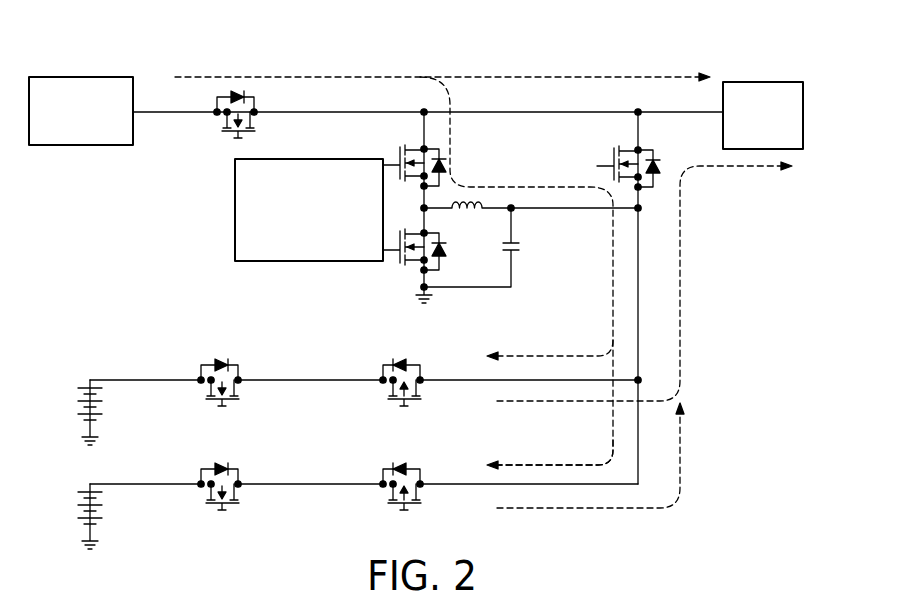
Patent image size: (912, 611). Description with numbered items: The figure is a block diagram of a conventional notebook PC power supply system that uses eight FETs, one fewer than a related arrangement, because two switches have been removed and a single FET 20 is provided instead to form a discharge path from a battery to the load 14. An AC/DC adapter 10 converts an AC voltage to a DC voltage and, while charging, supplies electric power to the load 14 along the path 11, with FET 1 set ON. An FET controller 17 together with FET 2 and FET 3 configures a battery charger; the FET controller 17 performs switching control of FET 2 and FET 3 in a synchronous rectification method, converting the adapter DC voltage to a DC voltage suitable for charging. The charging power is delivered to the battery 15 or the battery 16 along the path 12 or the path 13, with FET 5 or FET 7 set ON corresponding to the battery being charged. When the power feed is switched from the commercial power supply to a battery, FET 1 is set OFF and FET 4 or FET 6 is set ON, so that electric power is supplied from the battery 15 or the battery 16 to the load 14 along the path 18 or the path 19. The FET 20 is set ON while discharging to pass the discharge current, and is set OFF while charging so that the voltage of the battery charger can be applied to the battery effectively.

The AC/DC adapter 10 is at (116, 78).
The path 11 is at (590, 78).
The path 12 is at (535, 356).
The path 13 is at (535, 465).
The load 14 is at (785, 83).
The battery 15 is at (65, 382).
The battery 16 is at (65, 487).
The FET controller 17 is at (233, 244).
The path 18 is at (682, 258).
The path 19 is at (683, 460).
The FET FET1 is at (207, 124).
The FET FET2 is at (478, 150).
The FET FET3 is at (402, 278).
The FET FET4 is at (376, 414).
The FET FET5 is at (197, 405).
The FET FET6 is at (376, 517).
The FET FET7 is at (197, 510).
The FET FET20 is at (697, 148).